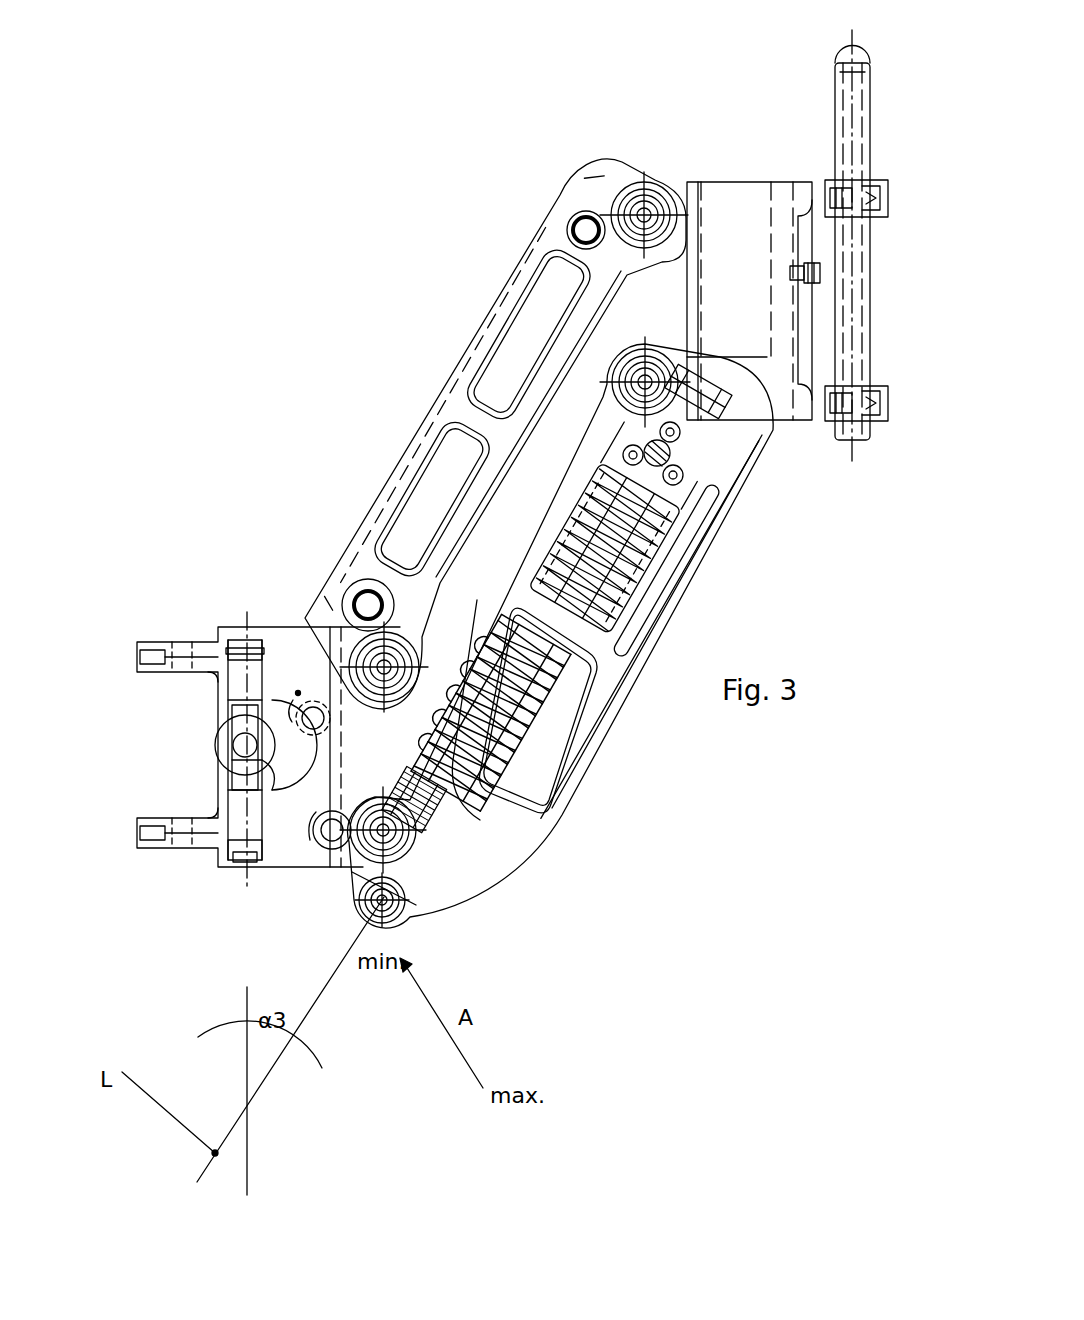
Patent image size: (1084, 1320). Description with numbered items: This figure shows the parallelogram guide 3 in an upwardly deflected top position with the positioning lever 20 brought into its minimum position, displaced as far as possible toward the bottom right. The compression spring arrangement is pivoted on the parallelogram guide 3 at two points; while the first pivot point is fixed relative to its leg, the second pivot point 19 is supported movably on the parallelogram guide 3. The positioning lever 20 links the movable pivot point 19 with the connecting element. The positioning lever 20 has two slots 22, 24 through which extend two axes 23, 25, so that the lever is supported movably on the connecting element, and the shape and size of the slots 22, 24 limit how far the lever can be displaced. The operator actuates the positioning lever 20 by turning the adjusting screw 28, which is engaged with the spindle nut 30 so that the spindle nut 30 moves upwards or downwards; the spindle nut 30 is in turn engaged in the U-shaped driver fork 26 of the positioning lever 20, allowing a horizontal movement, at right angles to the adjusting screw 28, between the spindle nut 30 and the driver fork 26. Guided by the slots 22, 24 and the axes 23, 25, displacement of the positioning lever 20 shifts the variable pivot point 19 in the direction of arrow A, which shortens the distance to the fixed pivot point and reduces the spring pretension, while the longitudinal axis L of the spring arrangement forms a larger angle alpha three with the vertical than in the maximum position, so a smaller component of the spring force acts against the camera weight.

The parallelogram guide 3 is at (456, 316).
The second pivot point 19 is at (398, 903).
The positioning lever 20 is at (337, 882).
The slot 22 is at (315, 805).
The axis 23 is at (326, 842).
The slot 24 is at (298, 693).
The axis 25 is at (311, 705).
The driver fork 26 is at (263, 777).
The adjusting screw 28 is at (245, 637).
The spindle nut 30 is at (245, 738).